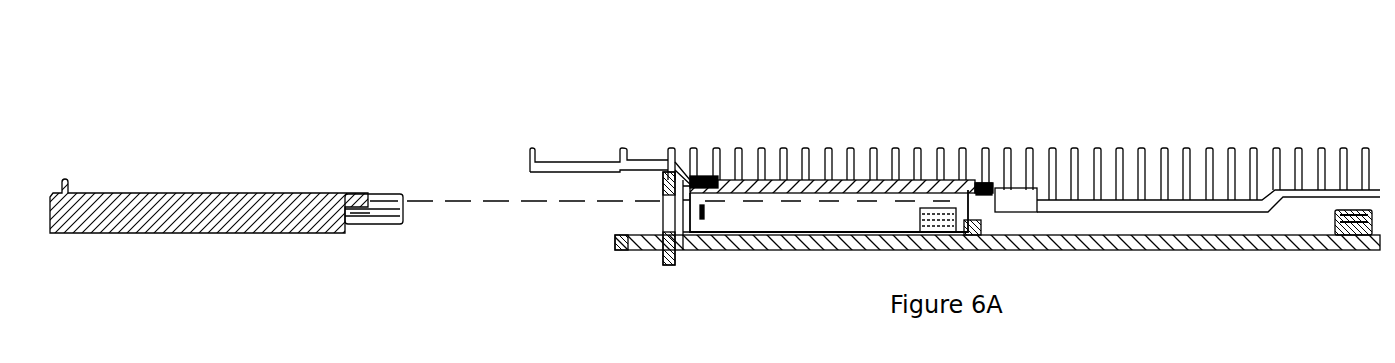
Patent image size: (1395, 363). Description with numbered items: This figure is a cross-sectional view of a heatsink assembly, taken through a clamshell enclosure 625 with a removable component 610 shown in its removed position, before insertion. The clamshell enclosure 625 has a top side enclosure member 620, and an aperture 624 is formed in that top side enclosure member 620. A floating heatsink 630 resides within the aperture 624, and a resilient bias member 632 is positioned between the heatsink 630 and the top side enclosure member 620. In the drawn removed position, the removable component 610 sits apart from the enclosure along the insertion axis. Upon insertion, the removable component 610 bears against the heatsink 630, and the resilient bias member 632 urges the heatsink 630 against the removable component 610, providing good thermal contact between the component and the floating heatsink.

The removable component 610 is at (305, 193).
The top side enclosure member 620 is at (947, 126).
The aperture 624 is at (680, 143).
The clamshell enclosure 625 is at (1129, 130).
The floating heatsink 630 is at (805, 148).
The resilient bias member 632 is at (993, 190).